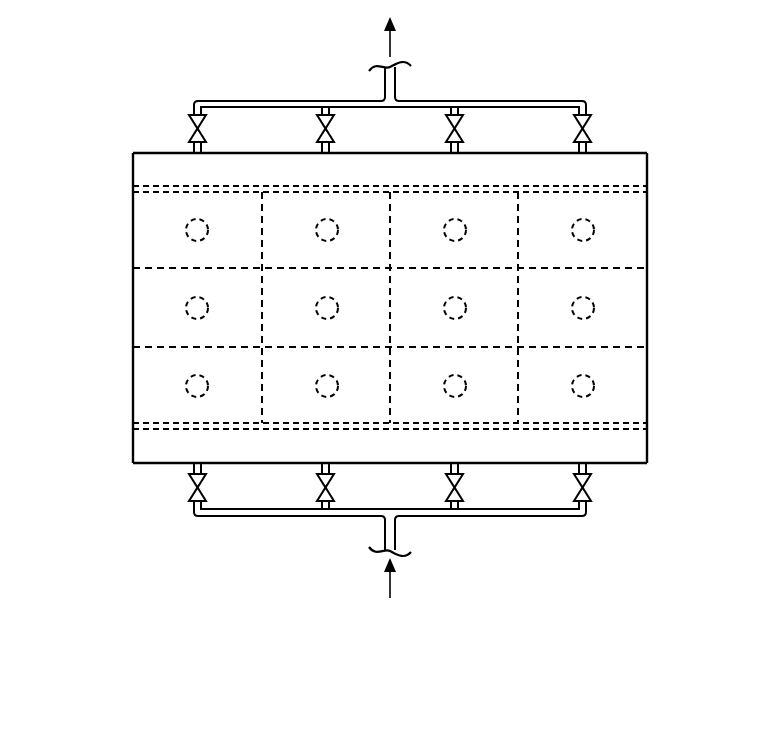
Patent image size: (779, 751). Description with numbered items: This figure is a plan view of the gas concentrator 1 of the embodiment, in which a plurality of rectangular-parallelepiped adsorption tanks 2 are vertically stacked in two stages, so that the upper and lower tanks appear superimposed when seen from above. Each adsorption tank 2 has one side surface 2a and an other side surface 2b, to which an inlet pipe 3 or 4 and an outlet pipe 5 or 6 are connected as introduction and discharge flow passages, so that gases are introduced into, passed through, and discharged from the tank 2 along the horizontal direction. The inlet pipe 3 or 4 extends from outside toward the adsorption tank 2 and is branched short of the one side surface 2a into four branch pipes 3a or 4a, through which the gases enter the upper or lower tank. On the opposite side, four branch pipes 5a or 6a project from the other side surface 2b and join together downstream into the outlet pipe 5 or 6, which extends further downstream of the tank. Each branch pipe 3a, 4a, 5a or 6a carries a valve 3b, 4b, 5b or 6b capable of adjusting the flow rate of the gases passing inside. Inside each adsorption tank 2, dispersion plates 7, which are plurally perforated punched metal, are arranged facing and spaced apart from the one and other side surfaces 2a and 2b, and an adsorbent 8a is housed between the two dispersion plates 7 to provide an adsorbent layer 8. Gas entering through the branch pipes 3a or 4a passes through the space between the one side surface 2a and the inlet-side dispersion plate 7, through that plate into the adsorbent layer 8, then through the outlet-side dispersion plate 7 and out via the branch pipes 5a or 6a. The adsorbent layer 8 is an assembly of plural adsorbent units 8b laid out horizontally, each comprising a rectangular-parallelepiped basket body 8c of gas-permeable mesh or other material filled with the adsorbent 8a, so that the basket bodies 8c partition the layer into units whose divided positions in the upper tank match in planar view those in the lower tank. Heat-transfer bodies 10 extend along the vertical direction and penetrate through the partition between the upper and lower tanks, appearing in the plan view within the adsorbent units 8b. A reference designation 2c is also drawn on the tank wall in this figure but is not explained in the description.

The gas concentrator 1 is at (90, 176).
The adsorption tank 2 is at (132, 152).
The one side surface 2a is at (158, 464).
The other side surface 2b is at (160, 153).
The side wall of tank 2c is at (143, 443).
The inlet pipe 3 is at (456, 530).
The inlet pipe 4 is at (396, 532).
The branch pipe 3a is at (458, 486).
The branch pipe 4a is at (590, 468).
The valve 3b is at (456, 502).
The valve 4b is at (589, 495).
The outlet pipe 5 is at (456, 85).
The outlet pipe 6 is at (542, 100).
The branch pipe 5a is at (458, 119).
The branch pipe 6a is at (588, 108).
The valve 5b is at (456, 130).
The valve 6b is at (590, 128).
The dispersion plate 7 is at (632, 186).
The adsorbent layer 8 is at (638, 204).
The adsorbent 8a is at (625, 253).
The adsorbent unit 8b is at (635, 230).
The basket body 8c is at (612, 268).
The heat-transfer body 10 is at (595, 308).